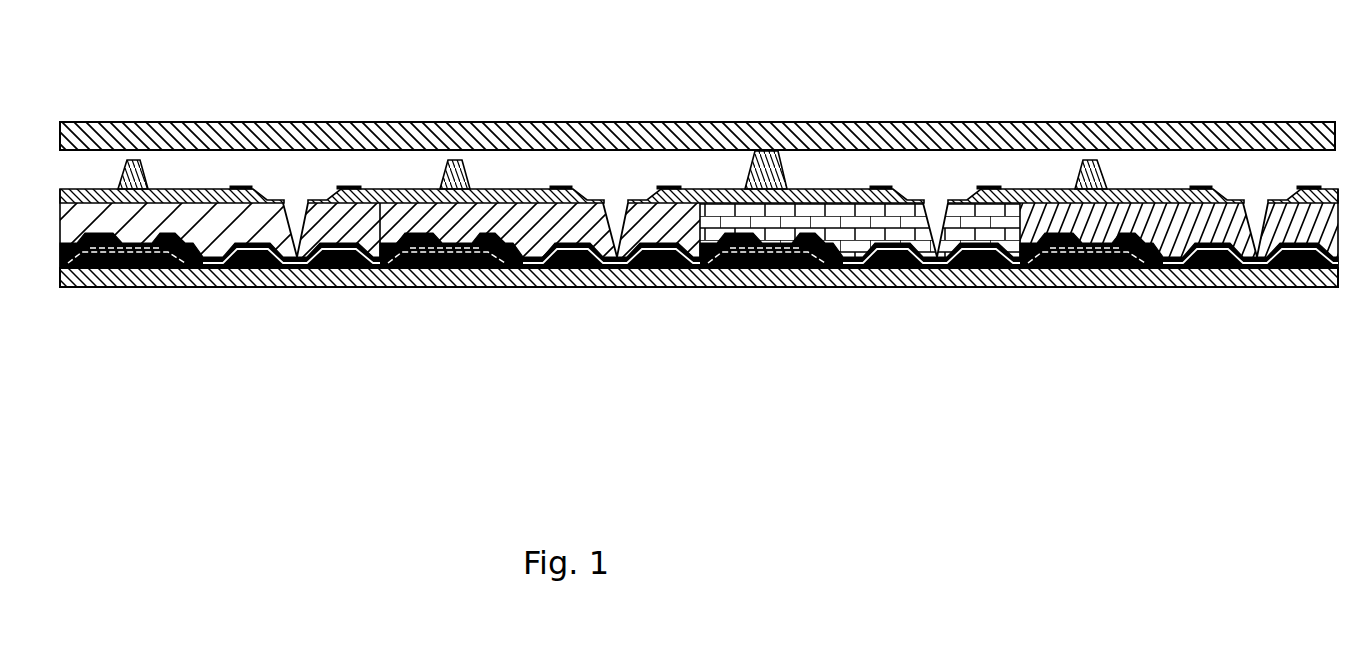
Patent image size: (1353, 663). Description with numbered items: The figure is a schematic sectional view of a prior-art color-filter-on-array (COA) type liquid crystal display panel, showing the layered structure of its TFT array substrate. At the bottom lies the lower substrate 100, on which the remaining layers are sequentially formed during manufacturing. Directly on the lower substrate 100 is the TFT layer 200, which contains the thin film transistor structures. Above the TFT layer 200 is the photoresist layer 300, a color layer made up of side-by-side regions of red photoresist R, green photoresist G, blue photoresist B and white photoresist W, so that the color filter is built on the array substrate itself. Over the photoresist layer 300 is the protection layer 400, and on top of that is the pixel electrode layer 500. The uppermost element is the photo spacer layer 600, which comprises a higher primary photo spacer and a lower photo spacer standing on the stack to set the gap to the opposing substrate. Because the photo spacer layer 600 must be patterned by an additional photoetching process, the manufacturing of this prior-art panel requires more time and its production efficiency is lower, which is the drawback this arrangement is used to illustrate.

The lower substrate 100 is at (1303, 287).
The TFT layer 200 is at (57, 233).
The photoresist layer 300 is at (699, 314).
The protection layer 400 is at (193, 190).
The pixel electrode layer 500 is at (348, 187).
The photo spacer layer 600 is at (773, 162).
The red photoresist R is at (268, 268).
The green photoresist G is at (575, 268).
The blue photoresist B is at (850, 216).
The white photoresist W is at (1110, 289).